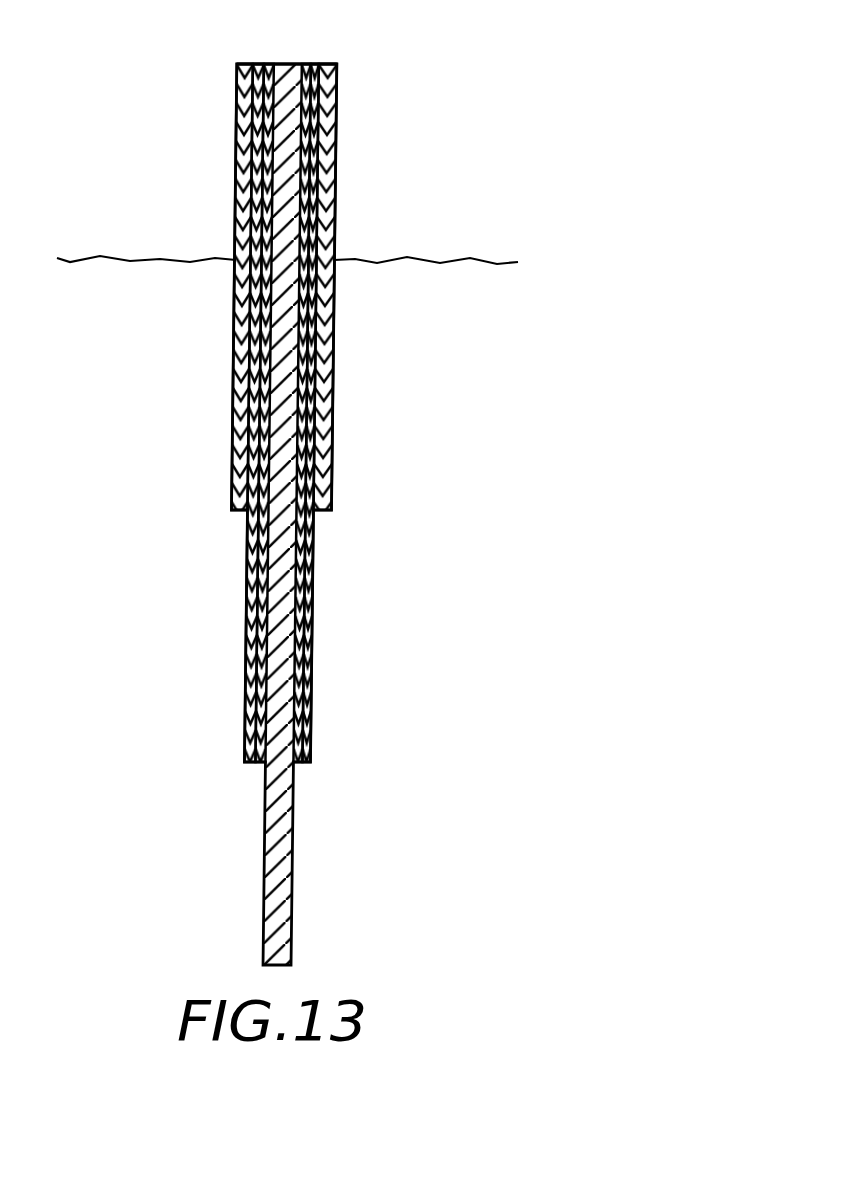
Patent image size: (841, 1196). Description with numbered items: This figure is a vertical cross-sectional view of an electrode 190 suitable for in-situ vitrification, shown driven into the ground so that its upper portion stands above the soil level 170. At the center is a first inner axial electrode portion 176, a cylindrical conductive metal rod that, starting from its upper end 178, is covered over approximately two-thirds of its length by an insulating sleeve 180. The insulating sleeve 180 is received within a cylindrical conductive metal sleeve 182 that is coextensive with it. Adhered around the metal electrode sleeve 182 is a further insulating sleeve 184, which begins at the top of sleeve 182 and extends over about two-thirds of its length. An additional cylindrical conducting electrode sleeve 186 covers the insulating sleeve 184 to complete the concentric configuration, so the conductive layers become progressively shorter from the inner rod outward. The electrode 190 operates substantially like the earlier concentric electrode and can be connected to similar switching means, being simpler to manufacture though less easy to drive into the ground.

The soil level 170 is at (186, 260).
The first inner axial electrode portion 176 is at (287, 213).
The upper end 178 is at (308, 64).
The insulating sleeve 180 is at (295, 623).
The cylindrical conductive metal sleeve 182 is at (303, 713).
The further insulating sleeve 184 is at (317, 352).
The additional cylindrical conducting electrode sleeve 186 is at (335, 147).
The electrode 190 is at (222, 324).